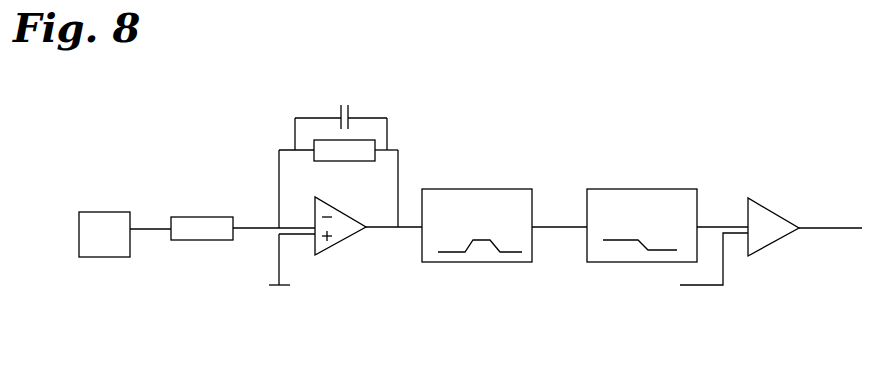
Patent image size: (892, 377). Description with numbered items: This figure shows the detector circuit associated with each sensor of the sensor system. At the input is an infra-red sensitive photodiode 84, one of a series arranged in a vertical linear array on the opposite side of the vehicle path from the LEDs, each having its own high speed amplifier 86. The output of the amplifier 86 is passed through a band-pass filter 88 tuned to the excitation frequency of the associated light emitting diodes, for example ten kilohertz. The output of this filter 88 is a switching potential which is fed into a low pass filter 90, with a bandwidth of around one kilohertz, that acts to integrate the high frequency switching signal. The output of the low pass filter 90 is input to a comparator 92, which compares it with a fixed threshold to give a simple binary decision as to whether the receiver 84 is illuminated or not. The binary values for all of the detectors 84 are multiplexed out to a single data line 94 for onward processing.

The infra-red sensitive photodiode 84 is at (107, 240).
The high speed amplifier 86 is at (338, 244).
The band-pass filter 88 is at (478, 262).
The low pass filter 90 is at (617, 262).
The comparator 92 is at (775, 225).
The data line 94 is at (830, 228).